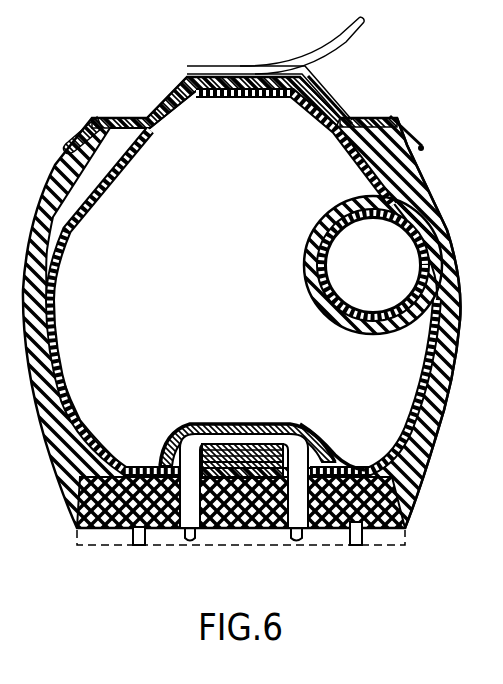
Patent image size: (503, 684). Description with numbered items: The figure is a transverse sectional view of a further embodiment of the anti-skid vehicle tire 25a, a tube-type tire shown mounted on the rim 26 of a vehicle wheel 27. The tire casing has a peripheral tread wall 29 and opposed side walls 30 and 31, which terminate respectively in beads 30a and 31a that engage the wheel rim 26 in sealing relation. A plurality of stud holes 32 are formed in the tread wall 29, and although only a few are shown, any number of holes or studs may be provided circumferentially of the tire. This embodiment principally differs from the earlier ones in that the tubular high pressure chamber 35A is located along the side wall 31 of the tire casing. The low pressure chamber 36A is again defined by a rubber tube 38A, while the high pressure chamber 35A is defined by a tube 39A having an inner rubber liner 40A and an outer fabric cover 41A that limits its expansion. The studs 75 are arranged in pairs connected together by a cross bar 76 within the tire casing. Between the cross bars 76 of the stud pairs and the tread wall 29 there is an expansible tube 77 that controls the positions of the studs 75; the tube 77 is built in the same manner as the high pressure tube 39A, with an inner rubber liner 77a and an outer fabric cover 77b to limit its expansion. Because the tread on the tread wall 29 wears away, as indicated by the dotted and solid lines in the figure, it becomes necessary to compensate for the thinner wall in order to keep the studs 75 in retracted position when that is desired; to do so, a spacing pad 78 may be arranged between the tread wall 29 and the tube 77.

The anti-skid vehicle tire 25a is at (451, 205).
The rim 26 is at (334, 100).
The vehicle wheel 27 is at (366, 34).
The tread wall 29 is at (344, 533).
The side wall 30 is at (30, 353).
The bead 30a is at (85, 128).
The side wall 31 is at (450, 276).
The bead 31a is at (383, 137).
The stud hole 32 is at (185, 505).
The high pressure chamber 35A is at (398, 291).
The low pressure chamber 36A is at (248, 293).
The rubber tube 38A is at (57, 250).
The tube 39A is at (352, 225).
The inner rubber liner 40A is at (320, 213).
The outer fabric cover 41A is at (304, 233).
The stud 75 is at (208, 520).
The cross bar 76 is at (230, 433).
The expansible tube 77 is at (292, 425).
The inner rubber liner 77a is at (271, 440).
The outer fabric cover 77b is at (250, 443).
The spacing pad 78 is at (314, 450).